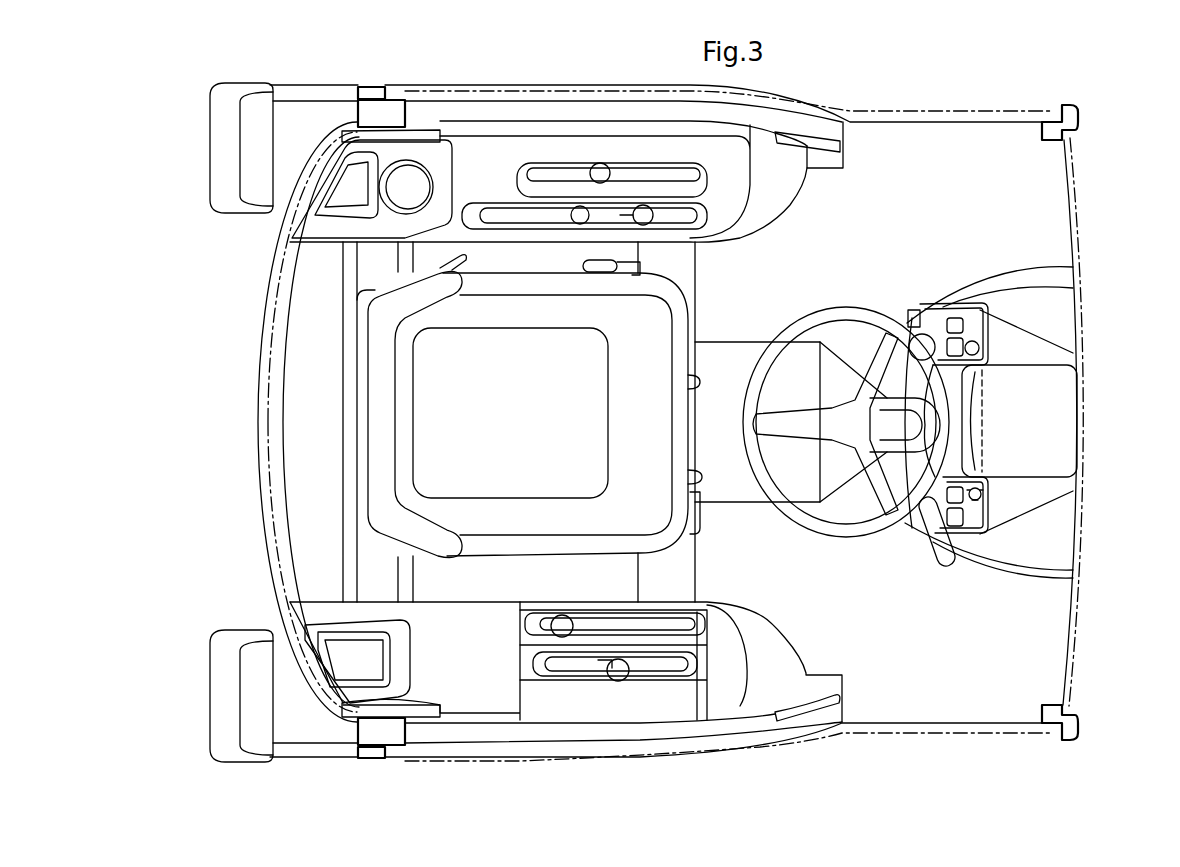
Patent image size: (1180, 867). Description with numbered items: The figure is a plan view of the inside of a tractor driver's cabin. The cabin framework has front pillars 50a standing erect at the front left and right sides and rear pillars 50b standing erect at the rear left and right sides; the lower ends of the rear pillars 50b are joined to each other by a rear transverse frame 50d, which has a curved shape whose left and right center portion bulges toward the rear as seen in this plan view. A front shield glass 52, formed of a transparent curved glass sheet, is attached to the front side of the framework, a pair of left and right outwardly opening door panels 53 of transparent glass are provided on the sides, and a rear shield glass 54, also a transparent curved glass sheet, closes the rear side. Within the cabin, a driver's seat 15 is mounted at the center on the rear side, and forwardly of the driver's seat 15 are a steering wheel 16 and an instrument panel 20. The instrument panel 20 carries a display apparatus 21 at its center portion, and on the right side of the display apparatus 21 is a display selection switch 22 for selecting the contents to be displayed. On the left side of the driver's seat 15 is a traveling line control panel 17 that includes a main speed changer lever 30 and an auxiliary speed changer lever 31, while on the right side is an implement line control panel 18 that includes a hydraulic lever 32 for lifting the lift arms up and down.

The driver's seat 15 is at (665, 312).
The steering wheel 16 is at (852, 308).
The traveling line control panel 17 is at (495, 150).
The implement line control panel 18 is at (480, 682).
The instrument panel 20 is at (918, 298).
The display apparatus 21 is at (962, 448).
The display selection switch 22 is at (982, 498).
The main speed changer lever 30 is at (598, 166).
The auxiliary speed changer lever 31 is at (580, 222).
The hydraulic lever 32 is at (618, 660).
The front pillars 50a is at (1072, 110).
The rear pillars 50b is at (375, 86).
The rear transverse frame 50d is at (260, 483).
The front shield glass 52 is at (1082, 233).
The door panels 53 is at (895, 110).
The rear shield glass 54 is at (268, 360).